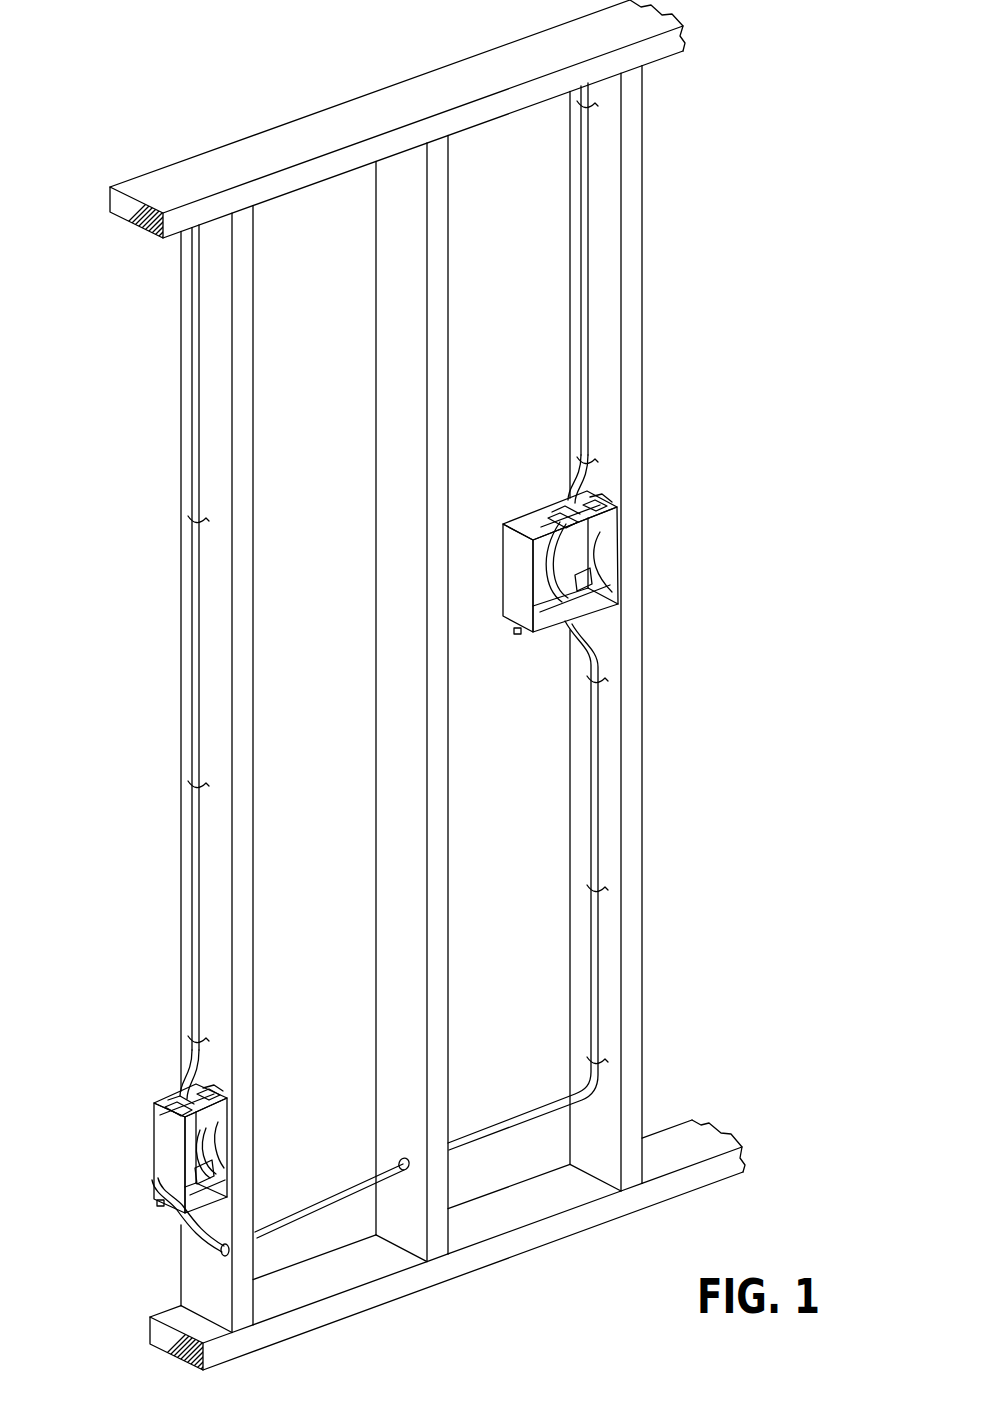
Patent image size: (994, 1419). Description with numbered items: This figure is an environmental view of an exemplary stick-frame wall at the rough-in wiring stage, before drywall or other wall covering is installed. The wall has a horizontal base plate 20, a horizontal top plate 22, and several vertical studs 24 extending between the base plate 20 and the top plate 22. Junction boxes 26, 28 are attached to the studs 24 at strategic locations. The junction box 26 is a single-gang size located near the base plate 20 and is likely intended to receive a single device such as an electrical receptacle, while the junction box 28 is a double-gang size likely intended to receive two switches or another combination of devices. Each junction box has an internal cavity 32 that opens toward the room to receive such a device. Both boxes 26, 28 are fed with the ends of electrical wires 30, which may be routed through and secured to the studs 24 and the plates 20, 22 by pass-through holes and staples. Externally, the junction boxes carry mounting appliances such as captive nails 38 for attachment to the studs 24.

The horizontal base plate 20 is at (423, 690).
The horizontal top plate 22 is at (300, 177).
The stud 24 is at (245, 323).
The junction box 26 is at (140, 1138).
The junction box 28 is at (500, 618).
The electrical wires 30 is at (185, 725).
The internal cavity 32 is at (545, 545).
The captive nails 38 is at (600, 497).